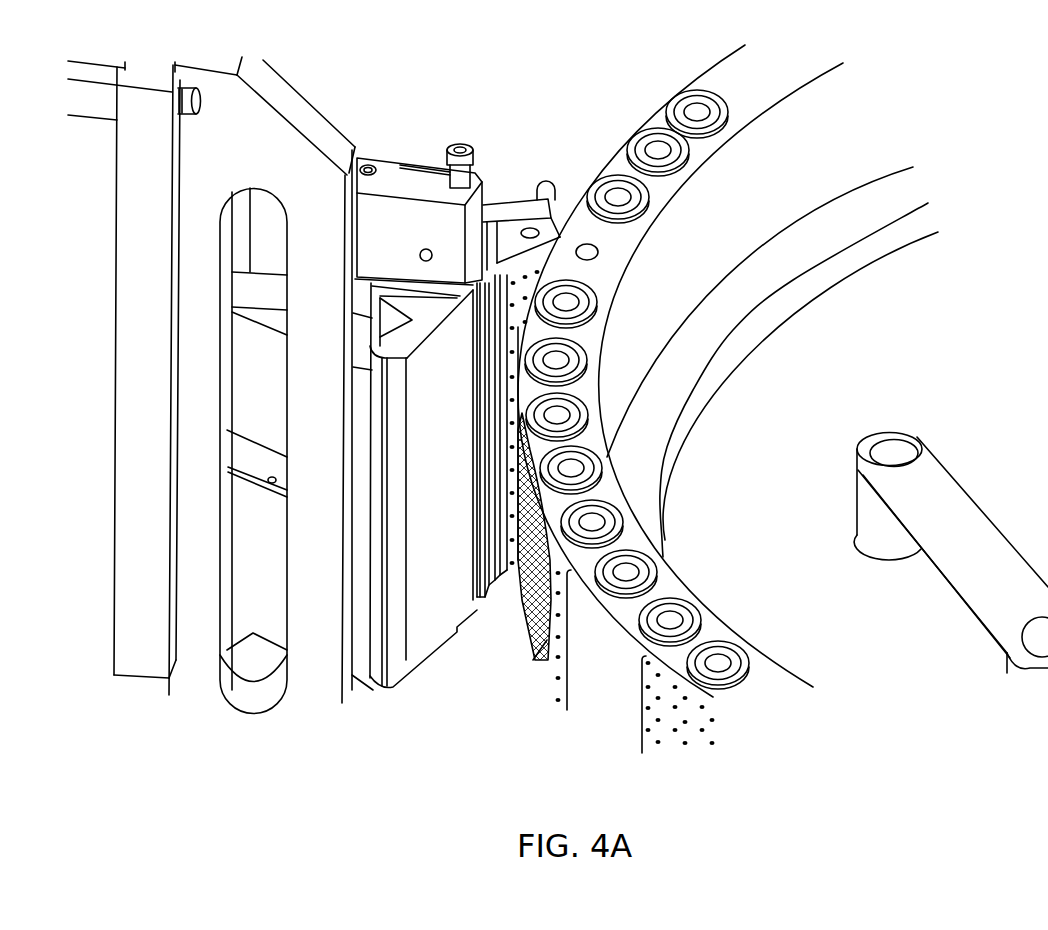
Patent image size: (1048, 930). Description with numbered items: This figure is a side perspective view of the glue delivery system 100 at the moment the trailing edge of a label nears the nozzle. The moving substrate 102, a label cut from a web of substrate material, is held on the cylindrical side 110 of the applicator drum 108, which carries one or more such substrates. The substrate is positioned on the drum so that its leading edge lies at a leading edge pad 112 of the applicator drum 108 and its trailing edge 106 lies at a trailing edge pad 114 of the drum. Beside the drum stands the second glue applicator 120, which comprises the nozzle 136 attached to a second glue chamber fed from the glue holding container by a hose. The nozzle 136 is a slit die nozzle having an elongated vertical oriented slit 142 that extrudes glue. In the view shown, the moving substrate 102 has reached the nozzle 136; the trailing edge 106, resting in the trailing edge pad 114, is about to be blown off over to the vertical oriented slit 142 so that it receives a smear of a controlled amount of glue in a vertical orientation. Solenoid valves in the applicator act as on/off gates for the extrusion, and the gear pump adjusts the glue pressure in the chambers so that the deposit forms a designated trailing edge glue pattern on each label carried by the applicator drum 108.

The glue delivery system 100 is at (925, 80).
The moving substrate 102 is at (521, 598).
The trailing edge 106 is at (547, 640).
The applicator drum 108 is at (714, 62).
The cylindrical side 110 is at (628, 715).
The leading edge pad 112 is at (707, 737).
The trailing edge pad 114 is at (562, 667).
The second glue applicator 120 is at (321, 111).
The nozzle 136 is at (490, 277).
The vertical oriented slit 142 is at (482, 615).